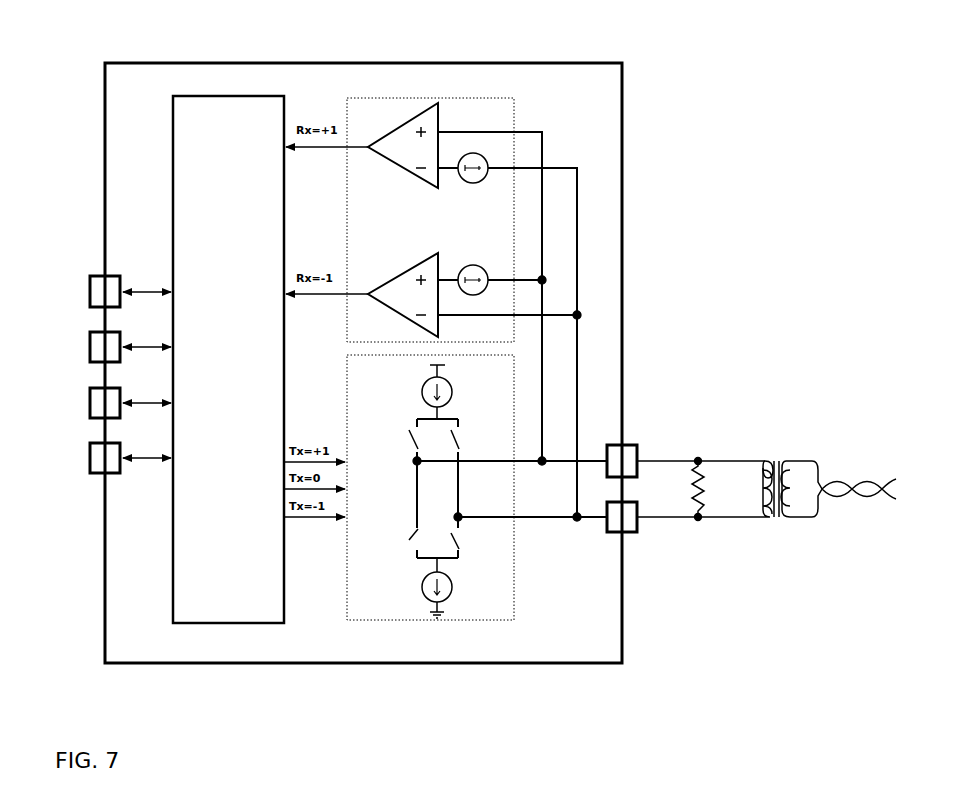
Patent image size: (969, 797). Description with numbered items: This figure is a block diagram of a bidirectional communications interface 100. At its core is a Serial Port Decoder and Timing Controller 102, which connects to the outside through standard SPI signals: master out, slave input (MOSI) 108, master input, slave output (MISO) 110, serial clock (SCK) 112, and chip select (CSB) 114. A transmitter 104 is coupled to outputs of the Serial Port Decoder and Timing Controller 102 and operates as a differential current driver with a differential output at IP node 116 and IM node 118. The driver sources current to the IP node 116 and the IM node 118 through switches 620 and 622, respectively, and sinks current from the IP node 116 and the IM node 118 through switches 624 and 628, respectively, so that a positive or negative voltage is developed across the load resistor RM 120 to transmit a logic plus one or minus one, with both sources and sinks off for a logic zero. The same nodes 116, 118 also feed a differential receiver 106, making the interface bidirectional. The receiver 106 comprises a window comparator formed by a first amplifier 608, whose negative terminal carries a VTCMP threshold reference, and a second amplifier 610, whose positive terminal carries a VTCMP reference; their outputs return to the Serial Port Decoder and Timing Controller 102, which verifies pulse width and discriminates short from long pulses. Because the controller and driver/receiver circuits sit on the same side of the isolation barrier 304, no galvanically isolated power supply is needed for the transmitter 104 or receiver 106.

The bidirectional communications interface 100 is at (268, 62).
The Serial Port Decoder and Timing Controller 102 is at (243, 623).
The transmitter 104 is at (357, 623).
The differential receiver 106 is at (403, 98).
The master out, slave input (MOSI) 108 is at (92, 276).
The master input, slave output (MISO) 110 is at (92, 332).
The serial clock (SCK) 112 is at (92, 388).
The chip select (CSB) 114 is at (92, 443).
The IP node 116 is at (630, 445).
The IM node 118 is at (622, 522).
The load resistor RM 120 is at (700, 460).
The isolation barrier 304 is at (786, 460).
The first amplifier 608 is at (438, 105).
The second amplifier 610 is at (425, 275).
The switch 620 is at (413, 430).
The switch 622 is at (460, 419).
The switch 624 is at (410, 540).
The switch 628 is at (465, 540).